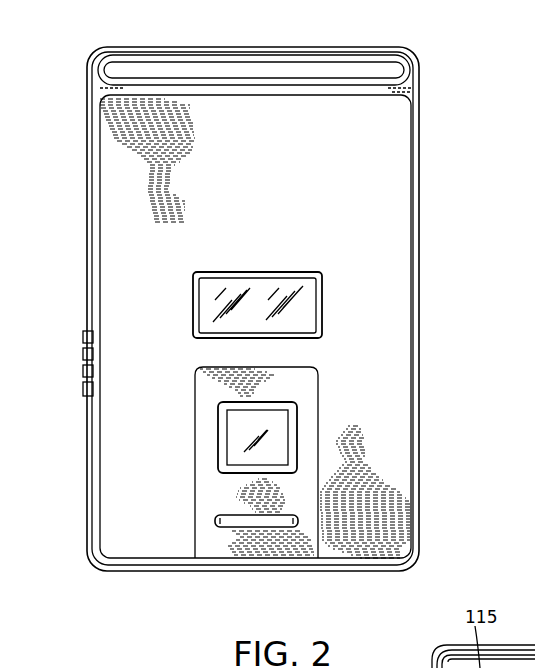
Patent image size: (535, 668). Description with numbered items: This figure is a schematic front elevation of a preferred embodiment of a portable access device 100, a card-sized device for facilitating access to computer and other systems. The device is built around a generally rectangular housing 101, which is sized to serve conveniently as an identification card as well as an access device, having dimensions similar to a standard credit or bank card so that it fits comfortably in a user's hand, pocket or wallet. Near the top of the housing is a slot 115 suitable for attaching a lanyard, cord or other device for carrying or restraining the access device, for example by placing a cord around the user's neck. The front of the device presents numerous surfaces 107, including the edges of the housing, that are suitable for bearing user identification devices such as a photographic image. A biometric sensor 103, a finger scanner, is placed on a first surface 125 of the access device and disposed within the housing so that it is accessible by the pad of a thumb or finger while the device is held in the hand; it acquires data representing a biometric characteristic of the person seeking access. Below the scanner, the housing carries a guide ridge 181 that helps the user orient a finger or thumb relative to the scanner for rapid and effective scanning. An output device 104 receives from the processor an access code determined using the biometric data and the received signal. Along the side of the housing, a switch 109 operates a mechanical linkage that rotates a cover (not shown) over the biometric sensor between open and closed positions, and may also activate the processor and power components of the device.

The portable access device 100 is at (452, 178).
The housing 101 is at (398, 347).
The biometric sensor 103 is at (277, 440).
The output device 104 is at (303, 300).
The surfaces 107 is at (368, 150).
The switch 109 is at (84, 350).
The slot 115 is at (395, 72).
The first surface 125 is at (163, 382).
The guide ridge 181 is at (230, 523).